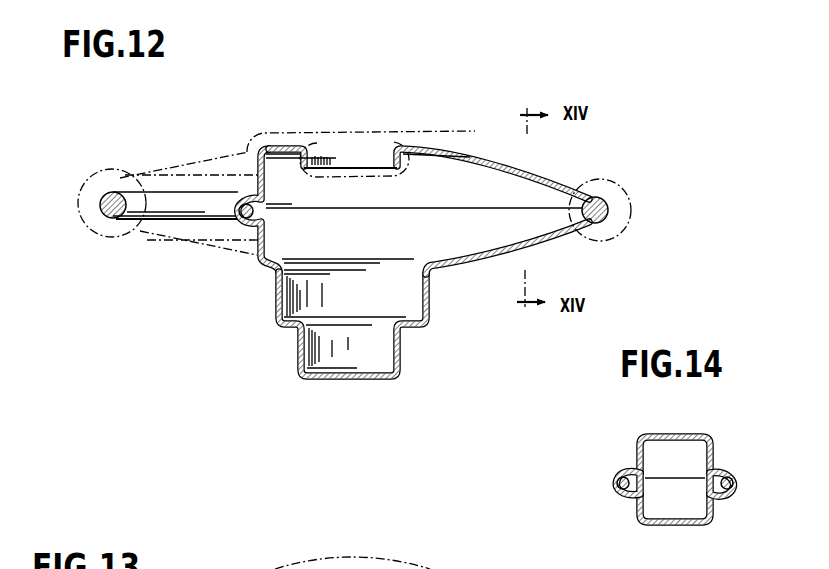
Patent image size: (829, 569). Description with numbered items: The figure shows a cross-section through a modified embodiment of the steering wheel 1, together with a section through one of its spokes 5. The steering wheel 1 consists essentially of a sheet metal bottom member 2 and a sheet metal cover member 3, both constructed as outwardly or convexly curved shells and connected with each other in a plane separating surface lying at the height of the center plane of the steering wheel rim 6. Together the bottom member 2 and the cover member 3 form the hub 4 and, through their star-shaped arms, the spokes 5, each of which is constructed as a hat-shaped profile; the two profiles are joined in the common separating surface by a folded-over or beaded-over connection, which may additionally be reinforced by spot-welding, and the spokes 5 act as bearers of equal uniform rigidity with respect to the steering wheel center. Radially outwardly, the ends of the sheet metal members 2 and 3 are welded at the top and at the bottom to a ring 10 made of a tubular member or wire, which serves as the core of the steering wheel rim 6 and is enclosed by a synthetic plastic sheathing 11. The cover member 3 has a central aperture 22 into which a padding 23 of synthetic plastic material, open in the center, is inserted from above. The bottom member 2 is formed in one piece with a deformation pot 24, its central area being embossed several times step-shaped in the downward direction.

In FIG. 12, the steering wheel 1 is at (423, 228).
In FIG. 12, the sheet metal bottom member 2 is at (459, 266).
In FIG. 14, the sheet metal bottom member 2 is at (688, 527).
In FIG. 12, the sheet metal cover member 3 is at (502, 156).
In FIG. 14, the sheet metal cover member 3 is at (677, 437).
In FIG. 12, the hub 4 is at (253, 252).
In FIG. 12, the spokes 5 is at (519, 198).
In FIG. 14, the spokes 5 is at (662, 462).
In FIG. 12, the steering wheel rim 6 is at (107, 170).
In FIG. 12, the ring 10 is at (608, 208).
In FIG. 12, the synthetic plastic sheathing 11 is at (619, 236).
In FIG. 12, the central aperture 22 is at (368, 158).
In FIG. 12, the padding 23 is at (250, 153).
In FIG. 12, the deformation pot 24 is at (278, 300).